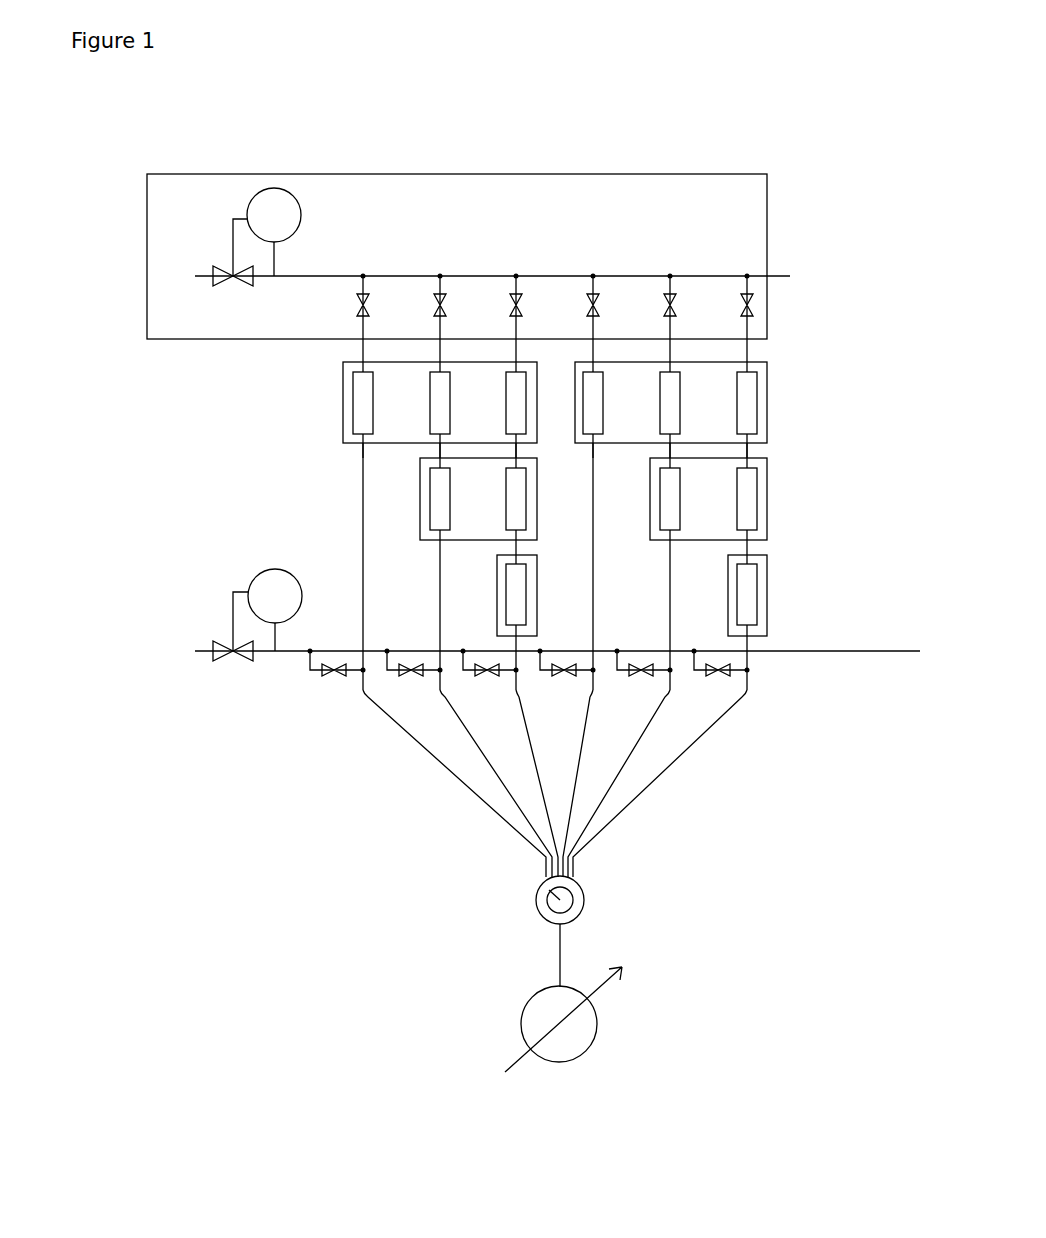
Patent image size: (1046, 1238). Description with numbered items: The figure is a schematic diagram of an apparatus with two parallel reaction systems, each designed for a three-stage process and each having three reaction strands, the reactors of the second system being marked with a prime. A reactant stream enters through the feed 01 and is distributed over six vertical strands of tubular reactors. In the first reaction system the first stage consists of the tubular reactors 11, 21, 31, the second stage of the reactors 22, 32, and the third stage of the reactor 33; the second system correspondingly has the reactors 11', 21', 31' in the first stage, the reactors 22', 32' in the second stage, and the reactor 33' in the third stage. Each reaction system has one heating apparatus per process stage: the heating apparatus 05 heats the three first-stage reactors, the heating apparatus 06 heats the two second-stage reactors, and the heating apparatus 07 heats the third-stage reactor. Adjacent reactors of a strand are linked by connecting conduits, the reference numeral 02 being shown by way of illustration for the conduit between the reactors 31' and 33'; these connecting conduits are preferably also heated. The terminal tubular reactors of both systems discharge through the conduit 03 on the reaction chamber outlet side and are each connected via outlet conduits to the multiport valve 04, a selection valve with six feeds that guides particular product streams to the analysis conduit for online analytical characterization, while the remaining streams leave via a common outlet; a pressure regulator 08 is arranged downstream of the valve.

The feed for reactant stream 01 is at (718, 276).
The connecting conduit 02 is at (750, 449).
The conduit on reaction chamber outlet side 03 is at (750, 643).
The multiport valve 04 is at (583, 900).
The heating apparatus for the first stage 05 is at (768, 403).
The heating apparatus for the second stage 06 is at (768, 497).
The heating apparatus for the third stage 07 is at (768, 597).
The pressure regulator 08 is at (600, 1023).
The tubular reactor 11 is at (324, 277).
The tubular reactor 21 is at (401, 277).
The tubular reactor 31 is at (478, 277).
The tubular reactor 11' is at (554, 277).
The tubular reactor 21' is at (631, 277).
The tubular reactor 31' is at (709, 277).
The tubular reactor 22 is at (274, 464).
The tubular reactor 32 is at (312, 505).
The tubular reactor 22' is at (725, 642).
The tubular reactor 32' is at (803, 507).
The tubular reactor 33 is at (310, 658).
The tubular reactor 33' is at (803, 603).